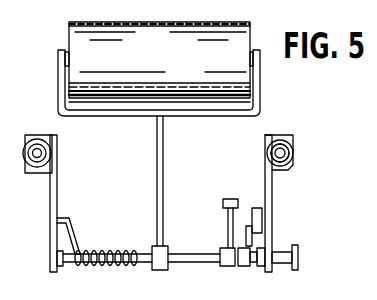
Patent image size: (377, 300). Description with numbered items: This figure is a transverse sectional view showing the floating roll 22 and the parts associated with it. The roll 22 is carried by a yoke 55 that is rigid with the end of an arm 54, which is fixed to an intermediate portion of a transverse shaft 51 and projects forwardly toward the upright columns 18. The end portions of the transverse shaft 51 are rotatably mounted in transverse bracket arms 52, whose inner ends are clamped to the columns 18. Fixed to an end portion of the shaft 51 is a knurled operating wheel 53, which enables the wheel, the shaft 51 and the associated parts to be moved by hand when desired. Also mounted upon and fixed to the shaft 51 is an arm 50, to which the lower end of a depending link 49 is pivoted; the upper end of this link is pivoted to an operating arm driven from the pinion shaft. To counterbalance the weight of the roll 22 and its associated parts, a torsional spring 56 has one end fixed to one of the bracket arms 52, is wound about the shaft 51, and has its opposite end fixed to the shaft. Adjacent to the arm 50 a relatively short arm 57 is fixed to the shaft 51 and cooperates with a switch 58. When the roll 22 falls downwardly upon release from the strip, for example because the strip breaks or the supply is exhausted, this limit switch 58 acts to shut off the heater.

The upright columns 18 is at (292, 142).
The floating roll 22 is at (80, 70).
The depending link 49 is at (233, 199).
The arm 50 is at (228, 229).
The transverse shaft 51 is at (198, 263).
The transverse bracket arms 52 is at (50, 212).
The knurled operating wheel 53 is at (298, 254).
The arm 54 is at (157, 199).
The yoke 55 is at (126, 113).
The torsional spring 56 is at (101, 266).
The relatively short arm 57 is at (245, 266).
The switch 58 is at (257, 208).